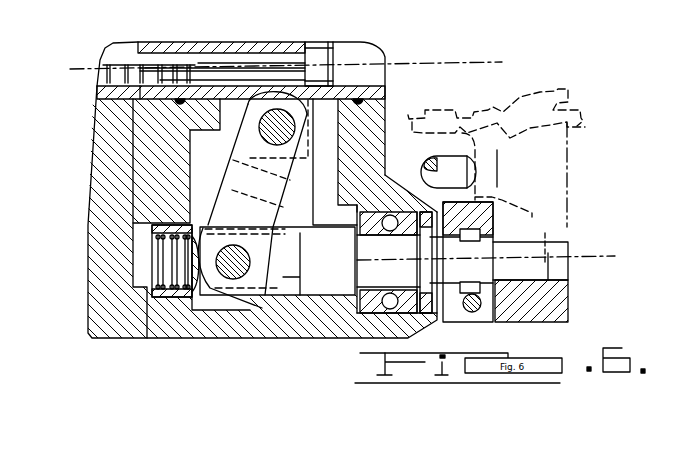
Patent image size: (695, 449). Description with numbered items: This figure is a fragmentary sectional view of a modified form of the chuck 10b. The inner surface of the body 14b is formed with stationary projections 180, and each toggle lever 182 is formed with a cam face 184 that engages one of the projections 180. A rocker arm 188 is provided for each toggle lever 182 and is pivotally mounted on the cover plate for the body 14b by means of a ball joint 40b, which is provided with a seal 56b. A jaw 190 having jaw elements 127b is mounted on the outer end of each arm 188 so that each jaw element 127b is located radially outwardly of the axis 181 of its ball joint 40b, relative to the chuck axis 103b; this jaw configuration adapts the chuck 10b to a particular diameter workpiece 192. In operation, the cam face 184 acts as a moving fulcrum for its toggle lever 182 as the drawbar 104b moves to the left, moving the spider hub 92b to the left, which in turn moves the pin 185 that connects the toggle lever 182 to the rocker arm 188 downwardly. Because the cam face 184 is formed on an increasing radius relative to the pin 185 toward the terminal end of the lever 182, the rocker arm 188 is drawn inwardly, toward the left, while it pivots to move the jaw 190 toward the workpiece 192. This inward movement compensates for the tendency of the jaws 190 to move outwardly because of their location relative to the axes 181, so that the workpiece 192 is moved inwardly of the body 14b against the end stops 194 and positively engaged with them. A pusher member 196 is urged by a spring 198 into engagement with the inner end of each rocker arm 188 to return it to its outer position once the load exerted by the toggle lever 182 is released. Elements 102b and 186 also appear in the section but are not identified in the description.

The chuck 10b is at (342, 221).
The body 14b is at (257, 335).
The ball joint 40b is at (391, 206).
The seal 56b is at (423, 265).
The spider hub 92b is at (270, 43).
The adjusting screw 102b is at (212, 58).
The chuck axis 103b is at (505, 37).
The drawbar 104b is at (123, 47).
The jaw elements 127b is at (565, 272).
The stationary projections 180 is at (300, 310).
The axis 181 is at (597, 248).
The toggle lever 182 is at (233, 200).
The cam face 184 is at (233, 275).
The pin 185 is at (218, 298).
The pivot pin 186 is at (350, 163).
The rocker arm 188 is at (340, 287).
The jaw 190 is at (493, 223).
The workpiece 192 is at (586, 127).
The end stops 194 is at (465, 173).
The pusher member 196 is at (173, 293).
The spring 198 is at (160, 253).